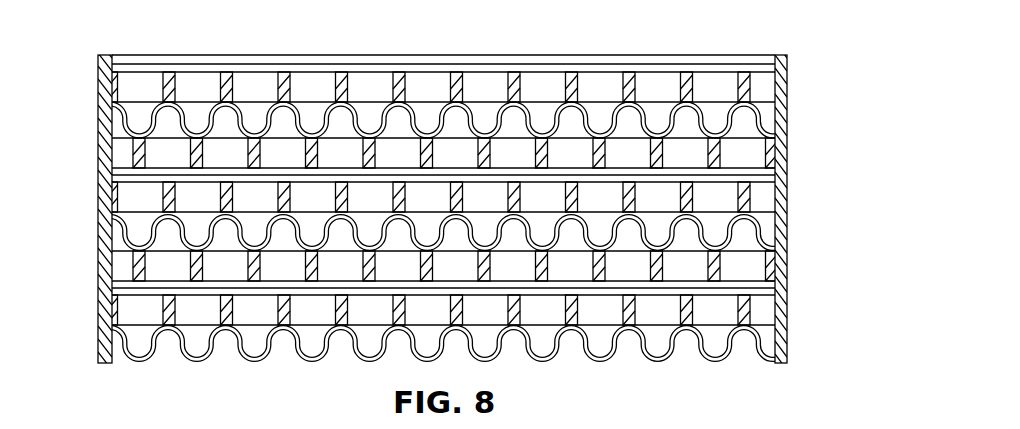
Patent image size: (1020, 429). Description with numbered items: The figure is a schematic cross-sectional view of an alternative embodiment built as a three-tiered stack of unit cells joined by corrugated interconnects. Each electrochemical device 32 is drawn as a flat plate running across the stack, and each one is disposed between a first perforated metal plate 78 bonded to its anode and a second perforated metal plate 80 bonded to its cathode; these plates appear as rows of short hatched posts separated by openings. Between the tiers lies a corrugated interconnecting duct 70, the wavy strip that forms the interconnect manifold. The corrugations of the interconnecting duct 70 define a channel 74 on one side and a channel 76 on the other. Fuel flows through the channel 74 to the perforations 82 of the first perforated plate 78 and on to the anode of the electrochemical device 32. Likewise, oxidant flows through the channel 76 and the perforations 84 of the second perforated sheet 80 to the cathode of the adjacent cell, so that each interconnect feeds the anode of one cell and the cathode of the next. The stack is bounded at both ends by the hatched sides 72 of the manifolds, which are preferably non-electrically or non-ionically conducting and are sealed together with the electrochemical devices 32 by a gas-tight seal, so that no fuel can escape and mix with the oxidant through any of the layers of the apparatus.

The electrochemical device 32 is at (626, 62).
The interconnecting duct 70 is at (128, 125).
The side 72 is at (103, 83).
The channel 74 is at (138, 230).
The channel 76 is at (168, 242).
The first perforated metal plate 78 is at (627, 317).
The second perforated metal plate 80 is at (718, 268).
The perforations 82 is at (717, 317).
The perforations 84 is at (753, 266).